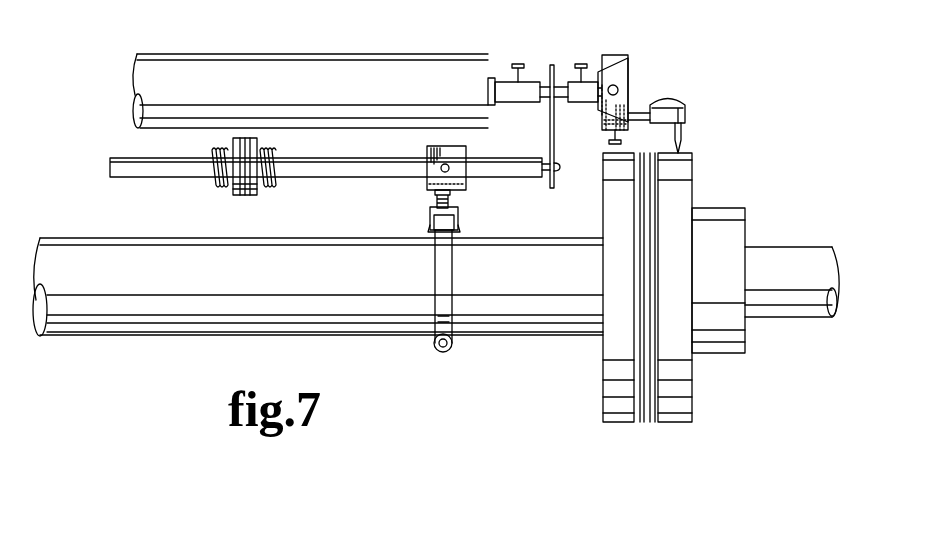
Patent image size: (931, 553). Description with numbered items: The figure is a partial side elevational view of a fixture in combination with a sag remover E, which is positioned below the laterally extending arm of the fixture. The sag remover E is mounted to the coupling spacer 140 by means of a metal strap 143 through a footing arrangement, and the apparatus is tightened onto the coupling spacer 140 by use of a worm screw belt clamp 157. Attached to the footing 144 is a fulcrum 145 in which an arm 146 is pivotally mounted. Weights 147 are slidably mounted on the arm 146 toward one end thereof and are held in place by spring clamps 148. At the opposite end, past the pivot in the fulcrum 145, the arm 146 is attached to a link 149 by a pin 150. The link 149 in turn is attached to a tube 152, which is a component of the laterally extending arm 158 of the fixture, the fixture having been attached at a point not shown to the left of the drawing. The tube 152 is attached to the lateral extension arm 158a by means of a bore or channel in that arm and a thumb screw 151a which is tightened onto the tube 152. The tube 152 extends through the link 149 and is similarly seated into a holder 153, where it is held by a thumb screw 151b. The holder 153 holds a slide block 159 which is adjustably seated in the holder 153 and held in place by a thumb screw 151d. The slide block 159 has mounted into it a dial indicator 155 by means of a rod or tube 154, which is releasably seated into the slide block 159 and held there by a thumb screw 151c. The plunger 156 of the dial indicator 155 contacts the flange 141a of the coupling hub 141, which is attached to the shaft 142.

The coupling spacer 140 is at (178, 316).
The coupling hub 141 is at (728, 208).
The flange 141a is at (693, 193).
The shaft 142 is at (788, 256).
The metal strap 143 is at (436, 265).
The footing 144 is at (462, 224).
The fulcrum 145 is at (427, 186).
The arm 146 is at (344, 164).
The weights 147 is at (241, 195).
The spring clamps 148 is at (214, 182).
The link 149 is at (549, 105).
The pin 150 is at (556, 172).
The thumb screw 151a is at (518, 62).
The thumb screw 151b is at (583, 62).
The thumb screw 151c is at (562, 168).
The thumb screw 151d is at (626, 88).
The tube 152 is at (554, 90).
The holder 153 is at (582, 104).
The rod or tube 154 is at (648, 114).
The dial indicator 155 is at (686, 108).
The plunger 156 is at (683, 138).
The worm screw belt clamp 157 is at (452, 344).
The laterally extending arm 158 is at (315, 65).
The lateral extension arm 158a is at (499, 78).
The slide block 159 is at (610, 75).
The sag remover E is at (113, 160).